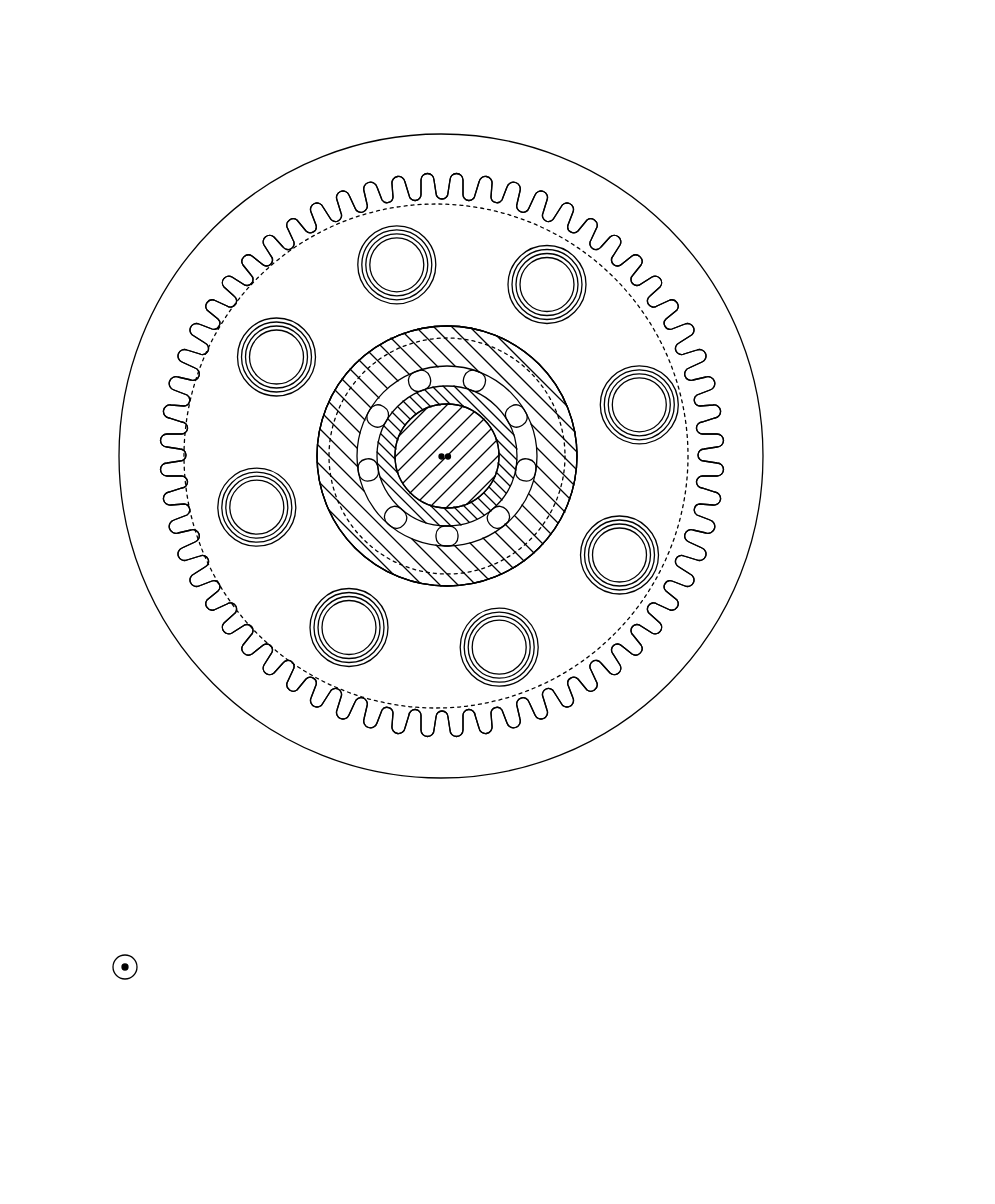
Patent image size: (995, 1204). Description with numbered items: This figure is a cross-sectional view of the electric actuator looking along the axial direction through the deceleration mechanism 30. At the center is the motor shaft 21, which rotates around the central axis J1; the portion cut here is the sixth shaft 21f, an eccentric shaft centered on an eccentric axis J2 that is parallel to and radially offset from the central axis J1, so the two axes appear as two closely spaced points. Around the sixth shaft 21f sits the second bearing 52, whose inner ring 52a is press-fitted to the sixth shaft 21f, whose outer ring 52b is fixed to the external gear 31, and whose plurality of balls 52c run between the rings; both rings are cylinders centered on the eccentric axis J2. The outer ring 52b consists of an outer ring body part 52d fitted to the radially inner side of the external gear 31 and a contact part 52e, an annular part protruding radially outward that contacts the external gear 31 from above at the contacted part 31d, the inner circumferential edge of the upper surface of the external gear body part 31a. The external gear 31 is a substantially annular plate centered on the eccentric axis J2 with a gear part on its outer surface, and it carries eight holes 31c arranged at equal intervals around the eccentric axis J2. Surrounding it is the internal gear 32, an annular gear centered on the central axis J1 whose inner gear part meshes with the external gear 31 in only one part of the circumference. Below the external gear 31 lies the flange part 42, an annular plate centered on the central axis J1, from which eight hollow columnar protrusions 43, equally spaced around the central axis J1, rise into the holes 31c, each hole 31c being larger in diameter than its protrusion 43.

The deceleration mechanism 30 is at (750, 83).
The internal gear 32 is at (527, 128).
The external gear 31 is at (574, 216).
The external gear body part 31a is at (315, 283).
The holes 31c is at (371, 283).
The contacted part 31d is at (560, 490).
The flange part 42 is at (679, 523).
The protrusions 43 is at (535, 268).
The motor shaft 21 is at (452, 401).
The sixth shaft 21f is at (473, 470).
The second bearing 52 is at (440, 501).
The inner ring 52a is at (393, 482).
The outer ring 52b is at (855, 211).
The balls 52c is at (395, 412).
The outer ring body part 52d is at (567, 463).
The contact part 52e is at (560, 393).
The central axis J1 is at (441, 457).
The eccentric axis J2 is at (448, 457).